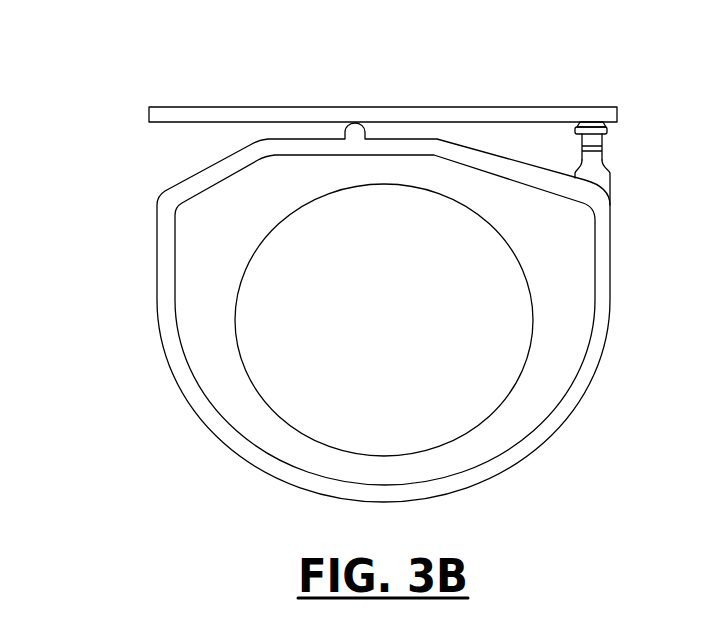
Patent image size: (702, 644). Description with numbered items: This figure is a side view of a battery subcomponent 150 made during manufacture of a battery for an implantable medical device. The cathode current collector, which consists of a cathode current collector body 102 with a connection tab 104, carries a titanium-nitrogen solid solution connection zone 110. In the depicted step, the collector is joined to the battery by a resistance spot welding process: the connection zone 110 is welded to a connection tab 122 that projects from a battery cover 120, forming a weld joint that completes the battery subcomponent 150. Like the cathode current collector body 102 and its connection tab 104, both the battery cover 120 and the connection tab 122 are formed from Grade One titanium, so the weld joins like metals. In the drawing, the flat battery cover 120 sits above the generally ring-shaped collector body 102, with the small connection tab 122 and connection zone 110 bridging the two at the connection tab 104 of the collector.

The battery subcomponent 150 is at (74, 97).
The cathode current collector body 102 is at (188, 273).
The battery cover 120 is at (300, 107).
The connection tab 122 is at (595, 126).
The Ti—N solid solution connection zone 110 is at (610, 132).
The connection tab 104 is at (603, 177).